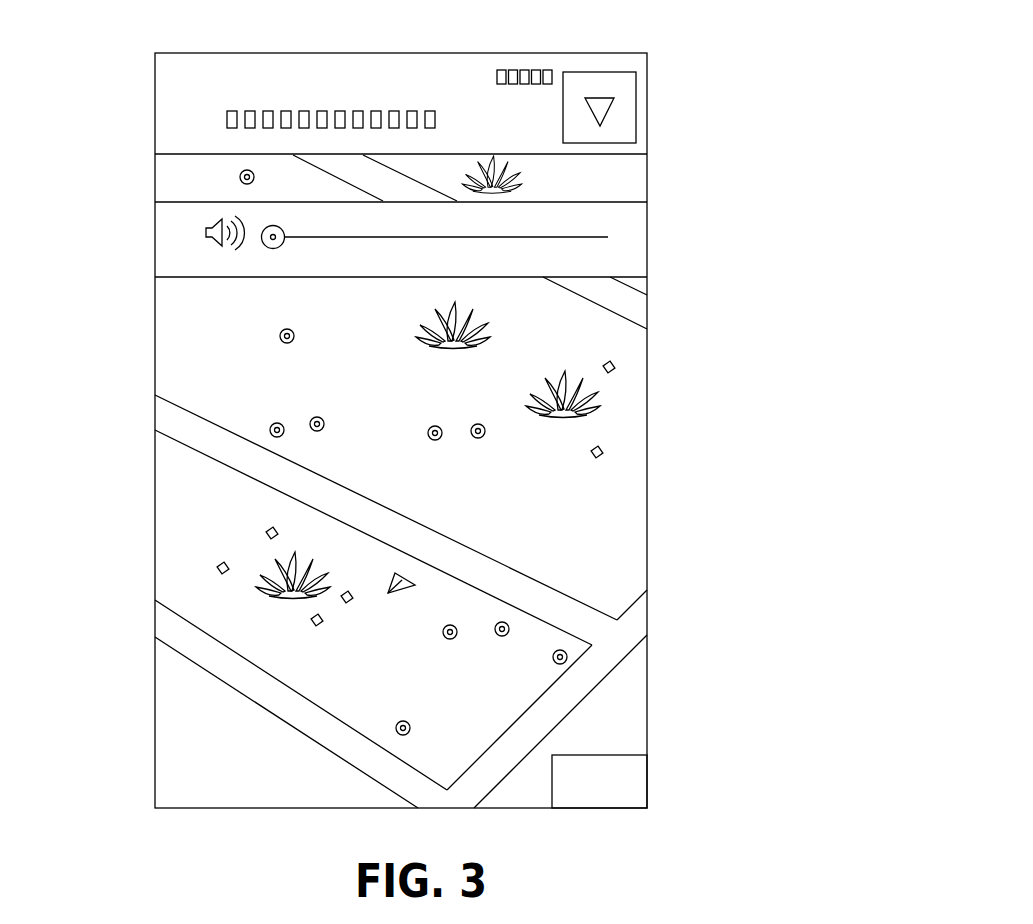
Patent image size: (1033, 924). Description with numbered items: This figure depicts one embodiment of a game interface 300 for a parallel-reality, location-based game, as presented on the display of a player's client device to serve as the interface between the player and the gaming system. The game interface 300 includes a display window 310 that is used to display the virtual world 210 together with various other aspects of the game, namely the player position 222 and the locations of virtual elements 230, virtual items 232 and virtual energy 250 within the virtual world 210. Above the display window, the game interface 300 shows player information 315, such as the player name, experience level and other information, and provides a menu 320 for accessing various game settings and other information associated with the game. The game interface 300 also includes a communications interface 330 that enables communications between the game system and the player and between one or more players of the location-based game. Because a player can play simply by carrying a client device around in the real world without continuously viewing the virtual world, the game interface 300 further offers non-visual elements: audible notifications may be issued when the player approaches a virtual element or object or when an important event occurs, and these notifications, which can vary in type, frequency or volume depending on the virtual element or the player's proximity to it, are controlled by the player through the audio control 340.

The game interface 300 is at (745, 137).
The display window 310 is at (638, 182).
The player information 315 is at (164, 73).
The menu 320 is at (634, 107).
The communications interface 330 is at (640, 787).
The audio control 340 is at (167, 222).
The virtual world 210 is at (638, 512).
The player position 222 is at (384, 600).
The virtual elements 230 is at (420, 325).
The virtual items 232 is at (266, 532).
The virtual energy 250 is at (295, 338).